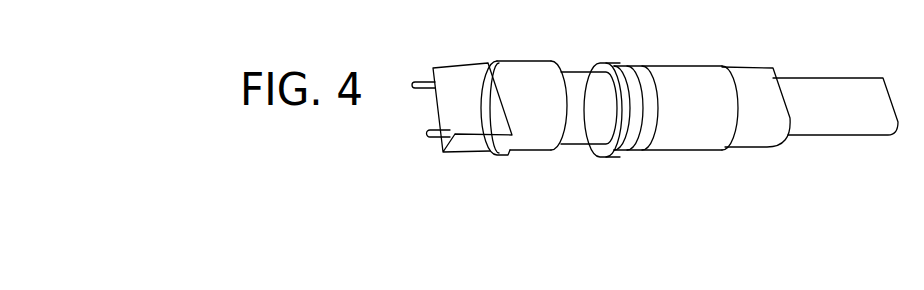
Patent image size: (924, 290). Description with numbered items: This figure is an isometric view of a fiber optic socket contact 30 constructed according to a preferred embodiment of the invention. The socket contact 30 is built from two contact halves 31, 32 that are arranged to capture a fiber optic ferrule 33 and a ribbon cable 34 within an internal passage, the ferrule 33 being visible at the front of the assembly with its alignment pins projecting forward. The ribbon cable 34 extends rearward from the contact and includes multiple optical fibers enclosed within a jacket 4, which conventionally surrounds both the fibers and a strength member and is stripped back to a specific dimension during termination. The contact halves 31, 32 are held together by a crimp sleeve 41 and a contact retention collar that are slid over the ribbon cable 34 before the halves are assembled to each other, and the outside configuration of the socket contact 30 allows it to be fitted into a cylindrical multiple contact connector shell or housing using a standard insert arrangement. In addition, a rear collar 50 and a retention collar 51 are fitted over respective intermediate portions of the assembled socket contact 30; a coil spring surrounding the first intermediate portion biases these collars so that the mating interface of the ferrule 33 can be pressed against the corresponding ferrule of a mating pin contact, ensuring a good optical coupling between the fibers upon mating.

The socket contact 30 is at (788, 38).
The ribbon cable 34 is at (828, 62).
The fiber optic ferrule 33 is at (472, 80).
The contact half 31 is at (523, 70).
The contact half 32 is at (523, 153).
The rear collar 50 is at (648, 82).
The retention collar 51 is at (685, 138).
The crimp sleeve 41 is at (753, 133).
The jacket 4 is at (838, 118).